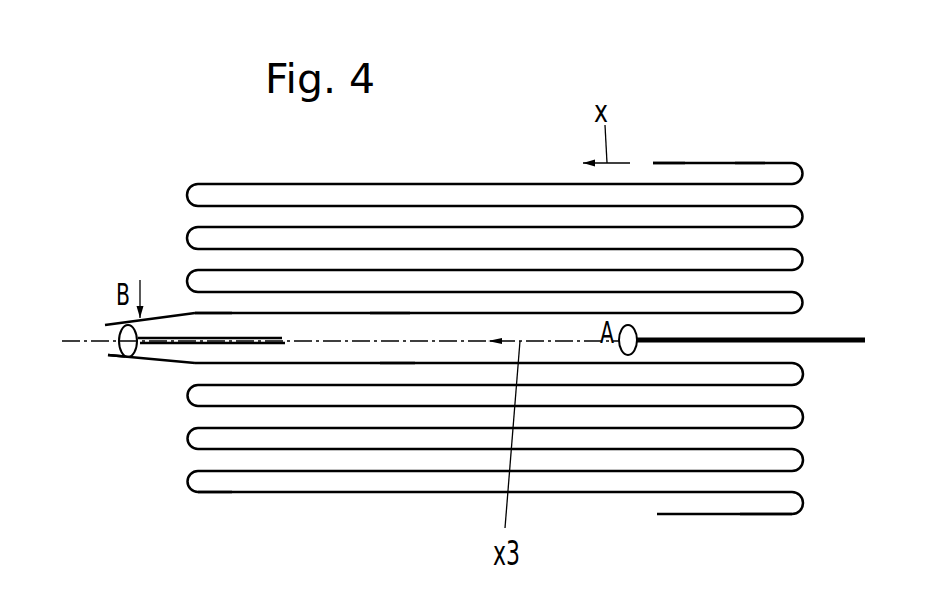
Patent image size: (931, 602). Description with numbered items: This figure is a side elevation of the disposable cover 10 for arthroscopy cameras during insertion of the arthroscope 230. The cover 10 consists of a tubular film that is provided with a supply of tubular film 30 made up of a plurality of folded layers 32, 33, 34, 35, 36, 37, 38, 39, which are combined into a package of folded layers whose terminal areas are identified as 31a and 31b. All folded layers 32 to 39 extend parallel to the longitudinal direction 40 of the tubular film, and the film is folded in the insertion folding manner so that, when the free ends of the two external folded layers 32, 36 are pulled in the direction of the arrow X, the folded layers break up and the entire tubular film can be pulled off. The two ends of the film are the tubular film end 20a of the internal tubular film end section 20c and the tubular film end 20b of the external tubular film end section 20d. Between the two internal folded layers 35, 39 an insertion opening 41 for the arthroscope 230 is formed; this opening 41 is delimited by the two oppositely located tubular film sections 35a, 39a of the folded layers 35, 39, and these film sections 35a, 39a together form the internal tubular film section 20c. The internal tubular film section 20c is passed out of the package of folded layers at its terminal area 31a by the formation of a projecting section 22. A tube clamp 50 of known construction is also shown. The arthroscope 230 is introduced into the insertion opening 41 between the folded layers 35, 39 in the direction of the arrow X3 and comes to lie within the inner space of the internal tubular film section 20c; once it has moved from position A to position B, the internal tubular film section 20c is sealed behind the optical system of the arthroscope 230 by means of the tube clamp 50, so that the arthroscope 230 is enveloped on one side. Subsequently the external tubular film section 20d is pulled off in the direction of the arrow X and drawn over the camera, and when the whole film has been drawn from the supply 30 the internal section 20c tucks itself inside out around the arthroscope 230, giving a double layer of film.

The disposable cover 10 is at (488, 181).
The tubular film end 20a is at (157, 317).
The tubular film end 20b is at (664, 163).
The internal tubular film end section 20c is at (210, 313).
The external tubular film end section 20d is at (748, 163).
The projecting section 22 is at (115, 357).
The supply of tubular film 30 is at (438, 472).
The terminal area of the package of folded layers 31a is at (210, 494).
The terminal area of the package of folded layers 31b is at (776, 515).
The folded layer 32 is at (803, 503).
The folded layer 33 is at (803, 460).
The folded layer 34 is at (803, 417).
The folded layer 35 is at (803, 374).
The tubular film section 35a is at (397, 363).
The folded layer 36 is at (803, 174).
The folded layer 37 is at (803, 216).
The folded layer 38 is at (803, 260).
The folded layer 39 is at (803, 302).
The tubular film section 39a is at (388, 313).
The longitudinal direction of the tubular film 40 is at (81, 340).
The insertion opening 41 is at (800, 325).
The tube clamp 50 is at (151, 420).
The arthroscope 230 is at (126, 358).